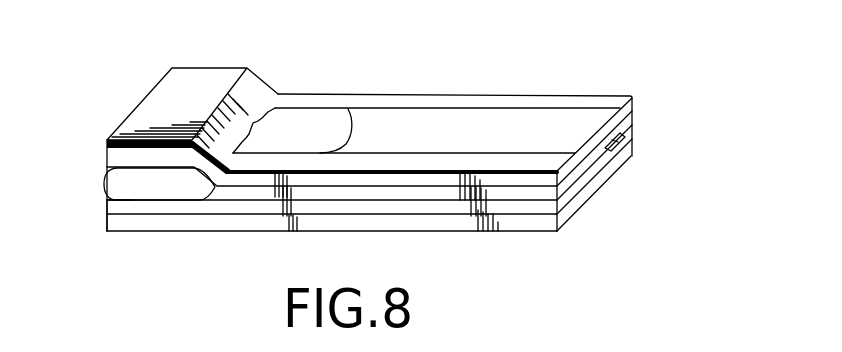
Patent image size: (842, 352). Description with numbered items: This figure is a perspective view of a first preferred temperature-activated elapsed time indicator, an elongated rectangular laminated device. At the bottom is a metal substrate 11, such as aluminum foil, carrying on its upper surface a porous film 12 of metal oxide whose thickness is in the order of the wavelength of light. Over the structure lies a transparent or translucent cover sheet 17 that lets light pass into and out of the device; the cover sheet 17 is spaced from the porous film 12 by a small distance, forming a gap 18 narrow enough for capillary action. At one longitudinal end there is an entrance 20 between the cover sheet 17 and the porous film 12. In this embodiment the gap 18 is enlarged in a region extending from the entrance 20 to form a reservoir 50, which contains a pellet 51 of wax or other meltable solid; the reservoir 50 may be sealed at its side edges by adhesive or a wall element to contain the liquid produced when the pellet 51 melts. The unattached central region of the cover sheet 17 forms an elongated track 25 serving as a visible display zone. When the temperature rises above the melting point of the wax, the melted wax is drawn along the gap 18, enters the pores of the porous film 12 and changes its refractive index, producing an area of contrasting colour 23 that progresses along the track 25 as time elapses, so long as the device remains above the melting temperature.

The metal substrate 11 is at (550, 224).
The porous film 12 is at (580, 187).
The cover sheet 17 is at (603, 102).
The gap 18 is at (612, 140).
The entrance 20 is at (275, 108).
The area of contrasting colour 23 is at (323, 128).
The track 25 is at (538, 148).
The reservoir 50 is at (107, 193).
The pellet 51 is at (104, 180).